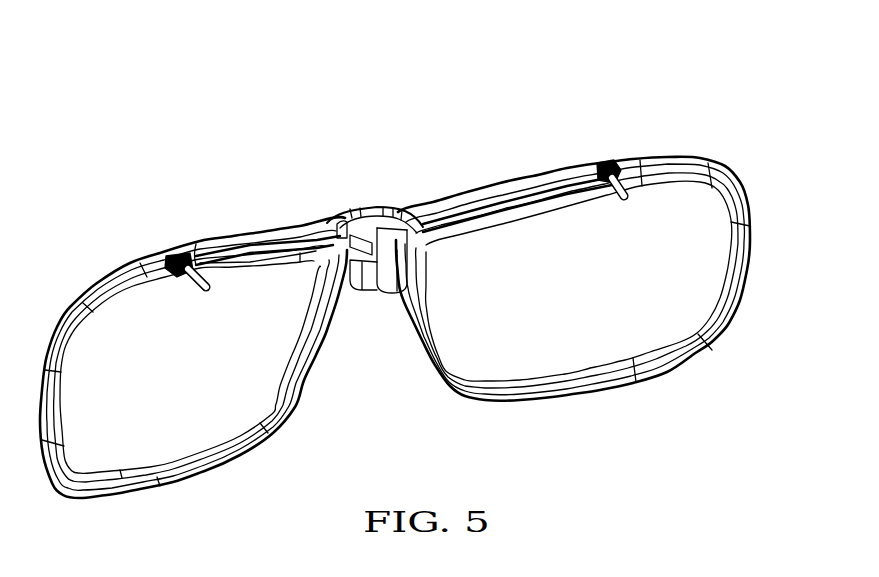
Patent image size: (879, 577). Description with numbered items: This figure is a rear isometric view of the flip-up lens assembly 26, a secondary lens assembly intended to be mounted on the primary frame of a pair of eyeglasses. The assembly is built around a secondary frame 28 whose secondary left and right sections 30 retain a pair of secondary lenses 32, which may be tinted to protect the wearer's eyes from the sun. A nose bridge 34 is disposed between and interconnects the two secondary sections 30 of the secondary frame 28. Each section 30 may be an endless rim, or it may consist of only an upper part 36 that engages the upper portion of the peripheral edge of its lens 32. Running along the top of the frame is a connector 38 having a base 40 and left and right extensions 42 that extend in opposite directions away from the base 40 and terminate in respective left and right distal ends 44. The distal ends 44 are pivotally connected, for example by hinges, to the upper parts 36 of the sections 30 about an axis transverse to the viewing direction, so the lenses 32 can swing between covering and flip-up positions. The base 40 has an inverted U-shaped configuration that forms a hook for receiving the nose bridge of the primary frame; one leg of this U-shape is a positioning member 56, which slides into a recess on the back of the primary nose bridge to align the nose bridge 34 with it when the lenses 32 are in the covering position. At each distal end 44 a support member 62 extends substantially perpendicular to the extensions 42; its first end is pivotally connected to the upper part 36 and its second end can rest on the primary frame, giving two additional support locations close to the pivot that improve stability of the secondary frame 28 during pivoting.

The flip-up lens assembly 26 is at (561, 99).
The secondary frame 28 is at (702, 162).
The secondary left and right sections 30 is at (95, 285).
The secondary lenses 32 is at (177, 412).
The nose bridge 34 is at (378, 207).
The upper part 36 is at (233, 230).
The connector 38 is at (360, 213).
The base 40 is at (362, 275).
The left and right extensions 42 is at (247, 270).
The left and right distal ends 44 is at (205, 293).
The positioning member 56 is at (388, 277).
The support member 62 is at (180, 281).